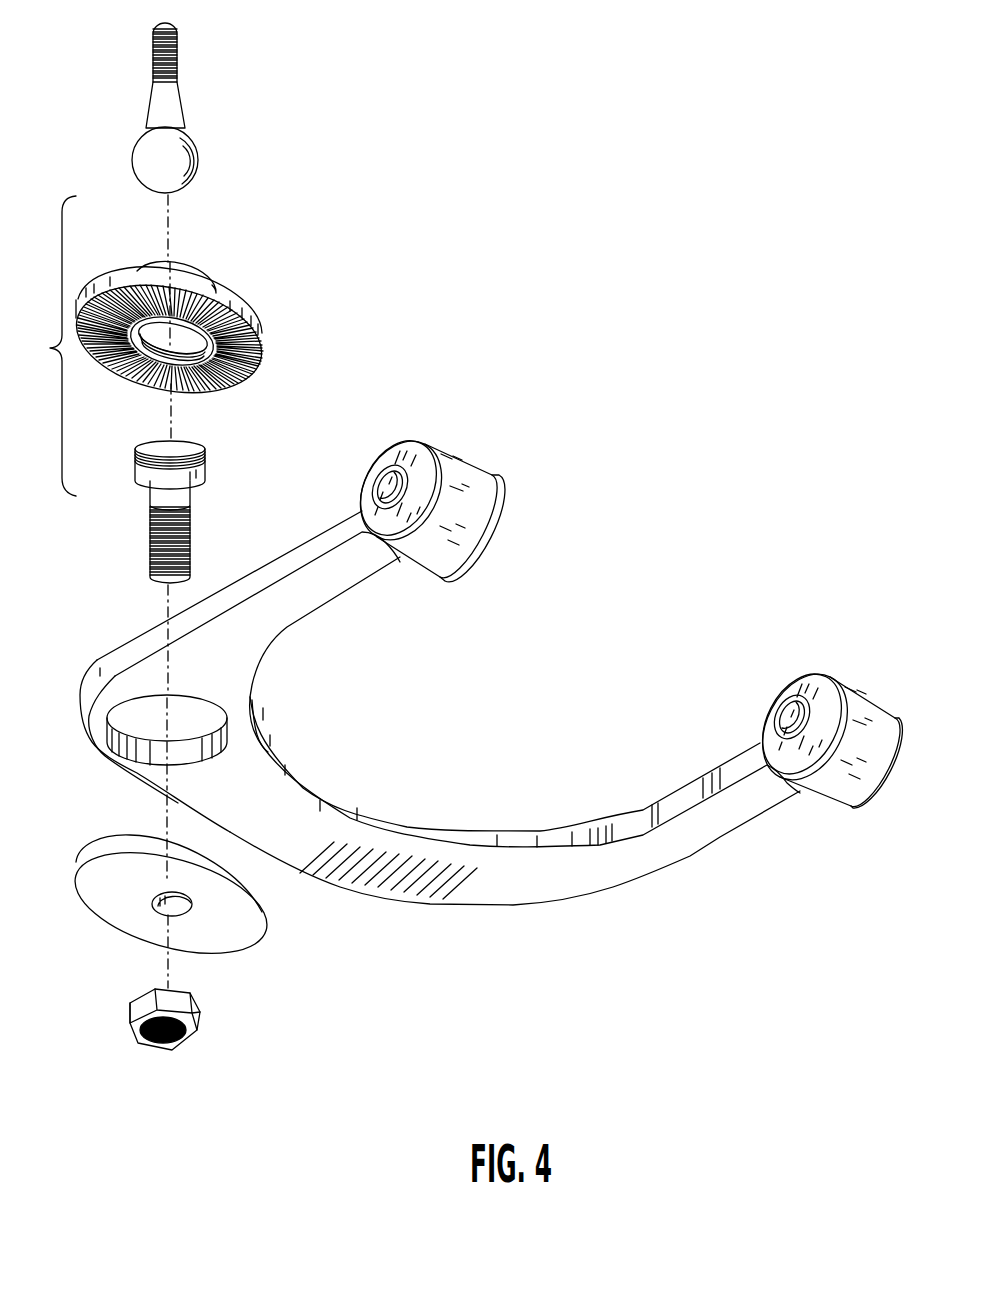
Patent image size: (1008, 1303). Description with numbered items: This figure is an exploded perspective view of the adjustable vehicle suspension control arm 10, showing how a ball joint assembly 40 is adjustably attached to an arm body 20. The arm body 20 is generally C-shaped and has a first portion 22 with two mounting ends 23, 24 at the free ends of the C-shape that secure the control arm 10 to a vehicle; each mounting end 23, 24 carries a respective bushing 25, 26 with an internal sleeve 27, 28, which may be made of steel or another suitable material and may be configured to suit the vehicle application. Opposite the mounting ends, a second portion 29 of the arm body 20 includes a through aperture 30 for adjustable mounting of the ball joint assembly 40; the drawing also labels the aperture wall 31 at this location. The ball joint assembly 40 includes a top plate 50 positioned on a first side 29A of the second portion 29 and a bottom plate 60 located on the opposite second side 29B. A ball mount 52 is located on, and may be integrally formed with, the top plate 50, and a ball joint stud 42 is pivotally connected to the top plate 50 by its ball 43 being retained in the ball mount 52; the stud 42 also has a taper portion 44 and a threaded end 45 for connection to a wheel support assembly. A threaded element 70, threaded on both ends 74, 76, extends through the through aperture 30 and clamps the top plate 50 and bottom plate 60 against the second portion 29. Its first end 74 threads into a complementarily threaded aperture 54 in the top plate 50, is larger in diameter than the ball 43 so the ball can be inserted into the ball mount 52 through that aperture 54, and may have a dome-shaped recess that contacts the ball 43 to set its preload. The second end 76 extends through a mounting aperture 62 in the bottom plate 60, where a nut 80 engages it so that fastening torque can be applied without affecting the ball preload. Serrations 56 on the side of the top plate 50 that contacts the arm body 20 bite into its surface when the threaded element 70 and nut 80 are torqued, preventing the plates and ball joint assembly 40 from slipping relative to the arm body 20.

The adjustable vehicle suspension control arm 10 is at (416, 739).
The arm body 20 is at (416, 748).
The first portion 22 is at (433, 480).
The mounting end 23 is at (819, 688).
The mounting end 24 is at (467, 465).
The bushing 25 is at (800, 677).
The bushing 26 is at (503, 520).
The internal sleeve 27 is at (780, 717).
The internal sleeve 28 is at (383, 472).
The second portion 29 is at (422, 902).
The first side 29A is at (383, 812).
The second side 29B is at (528, 883).
The through aperture 30 is at (145, 742).
The hole wall 31 is at (163, 757).
The ball joint assembly 40 is at (175, 389).
The ball joint stud 42 is at (178, 82).
The ball 43 is at (198, 157).
The taper portion 44 is at (173, 113).
The threaded end 45 is at (167, 108).
The top plate 50 is at (199, 345).
The ball mount 52 is at (215, 282).
The threaded aperture 54 is at (190, 387).
The serrations 56 is at (240, 382).
The bottom plate 60 is at (161, 904).
The mounting aperture 62 is at (163, 912).
The threaded element 70 is at (145, 494).
The first end 74 is at (137, 458).
The second end 76 is at (150, 547).
The nut 80 is at (198, 1028).